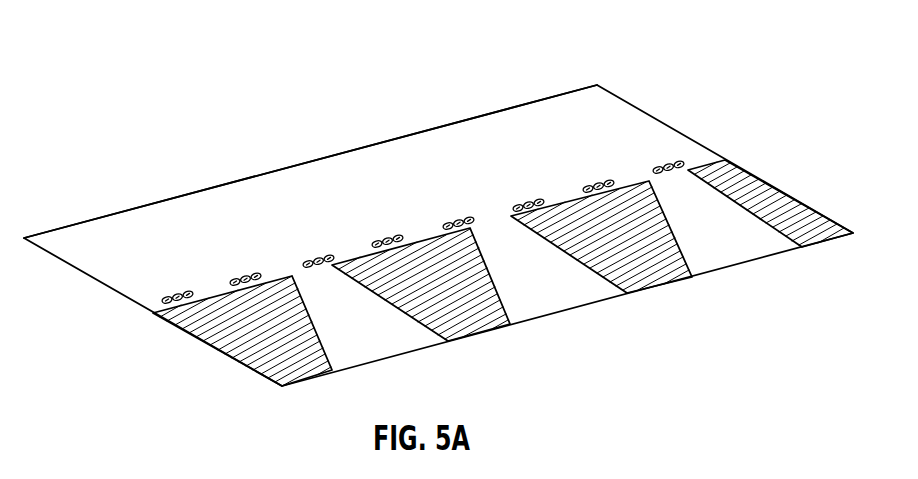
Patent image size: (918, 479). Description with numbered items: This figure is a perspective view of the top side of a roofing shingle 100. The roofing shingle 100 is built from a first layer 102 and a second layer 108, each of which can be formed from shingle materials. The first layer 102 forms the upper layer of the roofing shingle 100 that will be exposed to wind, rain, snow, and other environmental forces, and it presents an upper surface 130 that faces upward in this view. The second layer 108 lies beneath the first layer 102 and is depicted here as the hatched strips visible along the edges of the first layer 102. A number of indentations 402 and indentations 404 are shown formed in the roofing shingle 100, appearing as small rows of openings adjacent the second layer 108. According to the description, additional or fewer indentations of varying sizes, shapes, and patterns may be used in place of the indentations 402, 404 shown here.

The roofing shingle 100 is at (203, 52).
The first layer 102 is at (174, 218).
The upper surface 130 is at (77, 239).
The second layer 108 is at (221, 337).
The indentations 402 is at (246, 276).
The indentations 404 is at (398, 238).